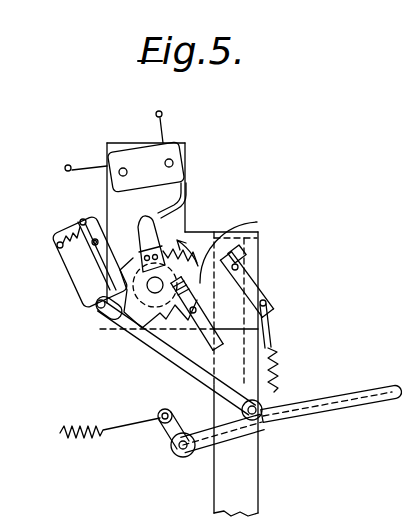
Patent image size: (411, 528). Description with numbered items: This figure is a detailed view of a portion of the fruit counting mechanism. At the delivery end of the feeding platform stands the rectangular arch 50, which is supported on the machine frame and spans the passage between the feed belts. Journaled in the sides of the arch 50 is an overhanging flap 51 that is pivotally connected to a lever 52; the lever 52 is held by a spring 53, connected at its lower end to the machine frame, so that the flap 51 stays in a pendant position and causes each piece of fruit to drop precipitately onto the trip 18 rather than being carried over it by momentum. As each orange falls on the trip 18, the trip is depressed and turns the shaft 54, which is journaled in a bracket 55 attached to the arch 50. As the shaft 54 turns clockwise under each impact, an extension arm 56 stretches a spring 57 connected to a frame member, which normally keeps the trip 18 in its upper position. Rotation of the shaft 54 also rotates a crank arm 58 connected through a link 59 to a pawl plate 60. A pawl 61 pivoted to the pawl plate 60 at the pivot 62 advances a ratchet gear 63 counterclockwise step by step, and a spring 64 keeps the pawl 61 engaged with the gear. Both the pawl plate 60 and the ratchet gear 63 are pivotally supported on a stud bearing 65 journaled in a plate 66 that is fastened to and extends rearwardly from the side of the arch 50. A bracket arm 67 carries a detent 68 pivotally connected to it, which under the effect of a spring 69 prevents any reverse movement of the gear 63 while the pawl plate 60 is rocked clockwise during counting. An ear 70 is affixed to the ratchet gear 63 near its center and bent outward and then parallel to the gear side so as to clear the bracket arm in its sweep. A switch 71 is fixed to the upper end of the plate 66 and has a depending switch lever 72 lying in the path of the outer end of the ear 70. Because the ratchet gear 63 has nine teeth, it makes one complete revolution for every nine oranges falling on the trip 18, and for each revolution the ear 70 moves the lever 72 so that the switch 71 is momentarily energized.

The trip 18 is at (340, 394).
The rectangular arch 50 is at (237, 483).
The overhanging flap 51 is at (268, 331).
The lever 52 is at (252, 288).
The spring 53 is at (282, 355).
The shaft 54 is at (180, 450).
The bracket 55 is at (206, 462).
The extension arm 56 is at (167, 428).
The spring 57 is at (70, 422).
The crank arm 58 is at (222, 437).
The link 59 is at (165, 355).
The pawl plate 60 is at (83, 294).
The pawl 61 is at (82, 278).
The pivot 62 is at (85, 247).
The ratchet gear 63 is at (108, 322).
The spring 64 is at (63, 236).
The stud bearing 65 is at (153, 293).
The plate 66 is at (196, 238).
The bracket arm 67 is at (181, 407).
The detent 68 is at (258, 235).
The spring 69 is at (205, 302).
The ear 70 is at (142, 222).
The switch 71 is at (140, 160).
The switch lever 72 is at (188, 195).